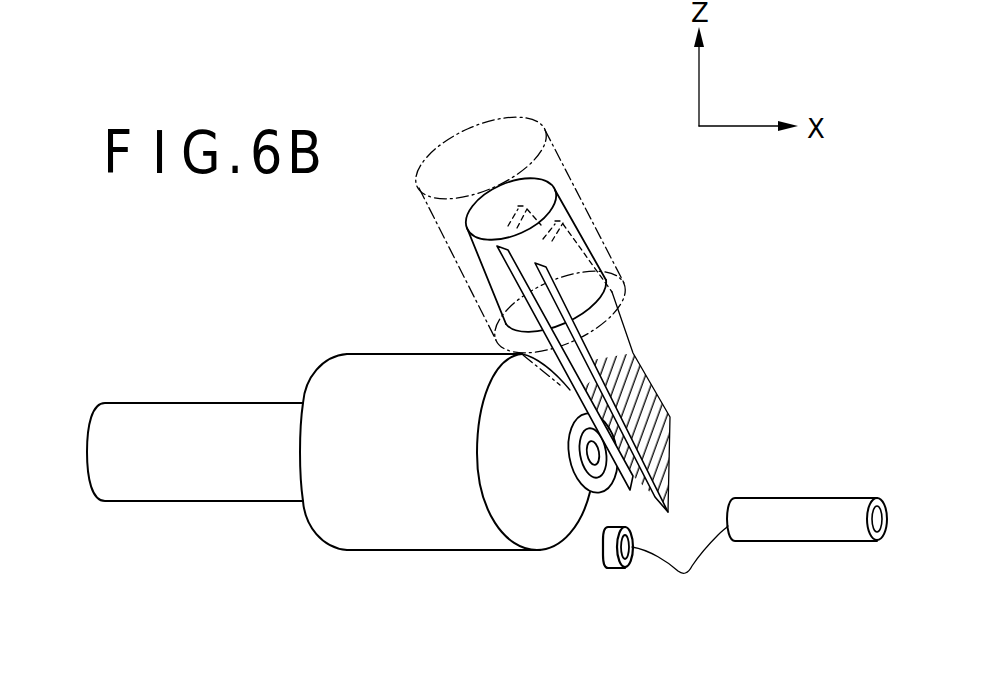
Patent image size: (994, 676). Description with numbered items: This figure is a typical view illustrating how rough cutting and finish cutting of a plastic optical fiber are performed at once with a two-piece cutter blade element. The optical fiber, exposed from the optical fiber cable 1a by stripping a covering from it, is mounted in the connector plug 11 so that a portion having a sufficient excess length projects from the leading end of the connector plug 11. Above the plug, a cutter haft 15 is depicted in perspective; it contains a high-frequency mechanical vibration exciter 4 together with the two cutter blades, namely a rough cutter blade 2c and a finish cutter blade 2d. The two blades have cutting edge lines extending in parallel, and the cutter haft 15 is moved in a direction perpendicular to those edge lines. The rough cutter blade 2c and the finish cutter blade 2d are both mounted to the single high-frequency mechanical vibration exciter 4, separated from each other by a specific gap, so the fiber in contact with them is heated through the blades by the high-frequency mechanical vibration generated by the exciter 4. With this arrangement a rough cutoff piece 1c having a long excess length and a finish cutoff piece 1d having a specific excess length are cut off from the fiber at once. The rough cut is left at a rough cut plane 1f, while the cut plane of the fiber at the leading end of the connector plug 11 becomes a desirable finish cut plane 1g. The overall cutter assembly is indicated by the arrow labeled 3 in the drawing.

The optical fiber cable 1a is at (196, 480).
The connector plug 11 is at (400, 523).
The finish cut plane 1g is at (585, 497).
The probe 3 is at (564, 118).
The cutter haft 15 is at (593, 209).
The high-frequency mechanical vibration exciter 4 is at (605, 264).
The rough cutter blade 2c is at (668, 433).
The finish cutter blade 2d is at (577, 392).
The rough cutoff piece 1c is at (804, 496).
The finish cutoff piece 1d is at (618, 568).
The rough cut plane 1f is at (680, 568).